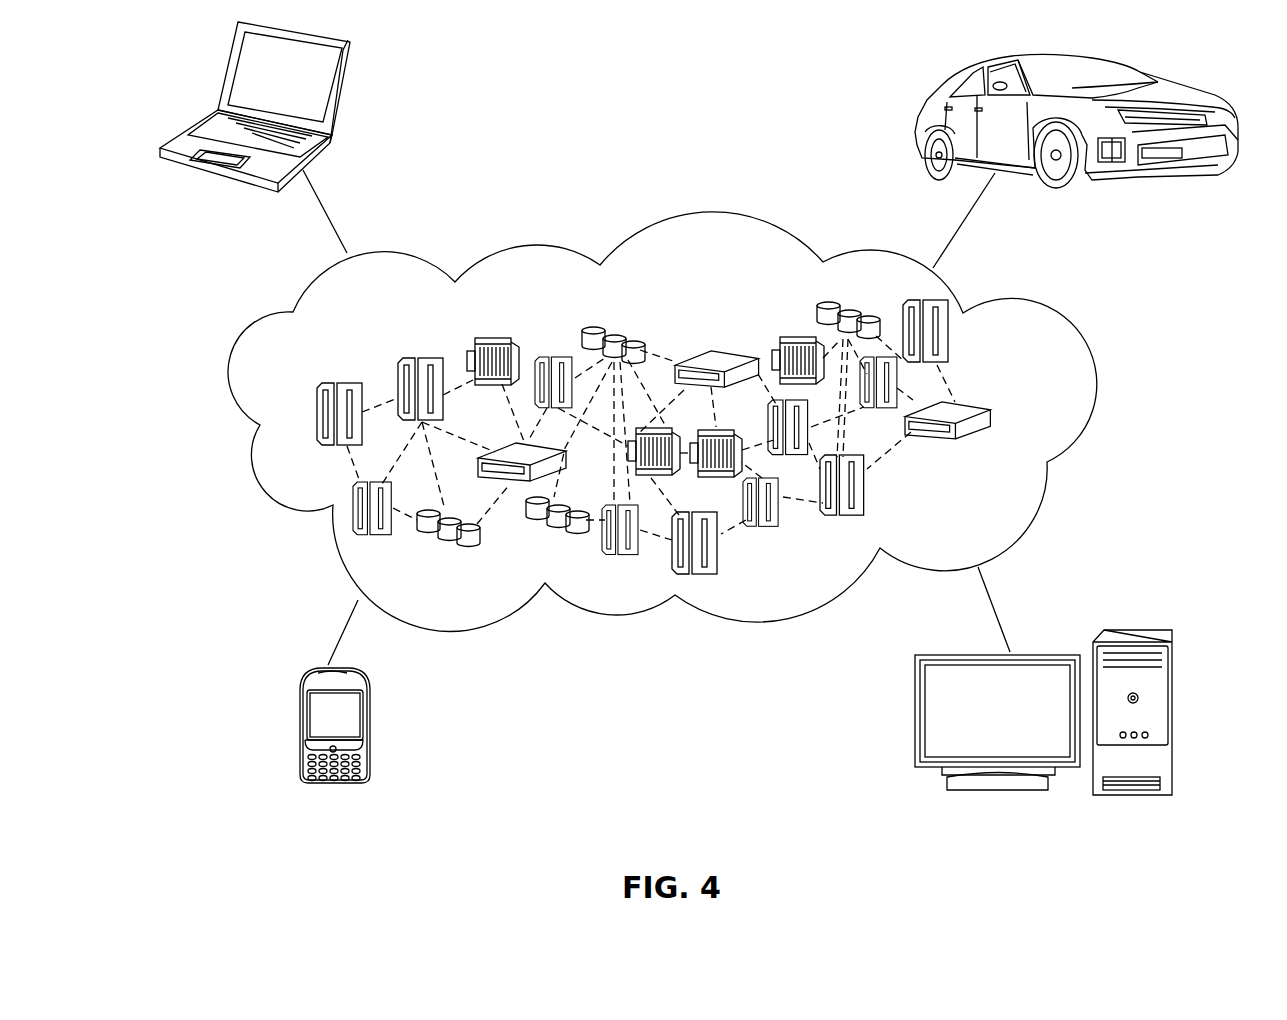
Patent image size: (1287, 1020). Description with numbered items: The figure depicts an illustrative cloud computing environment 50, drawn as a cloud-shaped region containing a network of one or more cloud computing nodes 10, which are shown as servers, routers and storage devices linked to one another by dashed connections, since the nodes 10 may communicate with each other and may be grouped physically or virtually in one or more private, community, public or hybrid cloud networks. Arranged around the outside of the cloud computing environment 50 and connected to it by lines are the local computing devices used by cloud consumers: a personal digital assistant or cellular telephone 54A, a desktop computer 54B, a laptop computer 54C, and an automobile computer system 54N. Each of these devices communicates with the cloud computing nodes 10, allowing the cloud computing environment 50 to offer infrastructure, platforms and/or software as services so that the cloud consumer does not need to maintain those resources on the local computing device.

The cloud computing nodes 10 is at (1029, 414).
The cloud computing environment 50 is at (1055, 326).
The personal digital assistant or cellular telephone 54A is at (300, 730).
The desktop computer 54B is at (1138, 627).
The laptop computer 54C is at (342, 92).
The automobile computer system 54N is at (925, 102).